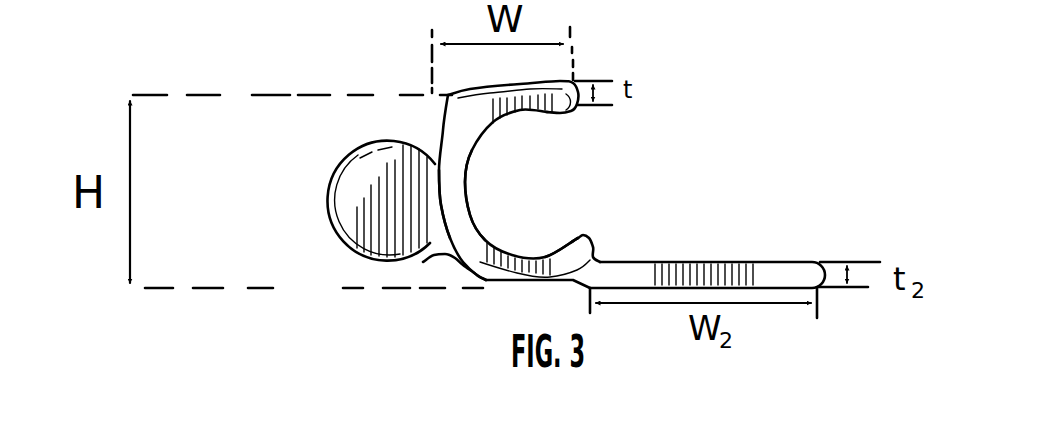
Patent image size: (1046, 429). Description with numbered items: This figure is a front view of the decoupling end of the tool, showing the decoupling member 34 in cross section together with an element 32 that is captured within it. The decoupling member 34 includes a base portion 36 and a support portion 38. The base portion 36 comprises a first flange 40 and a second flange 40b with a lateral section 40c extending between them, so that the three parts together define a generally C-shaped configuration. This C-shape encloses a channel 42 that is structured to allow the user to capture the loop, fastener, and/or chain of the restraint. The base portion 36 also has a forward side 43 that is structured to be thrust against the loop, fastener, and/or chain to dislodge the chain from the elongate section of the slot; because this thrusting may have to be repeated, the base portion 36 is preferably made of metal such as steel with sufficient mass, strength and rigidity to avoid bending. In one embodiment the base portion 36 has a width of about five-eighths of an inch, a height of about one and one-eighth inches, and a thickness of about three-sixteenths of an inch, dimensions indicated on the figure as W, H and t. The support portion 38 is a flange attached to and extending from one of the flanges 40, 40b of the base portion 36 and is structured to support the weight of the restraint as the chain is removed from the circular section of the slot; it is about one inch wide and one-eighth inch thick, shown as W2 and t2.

The elongated member (tube) held by clip 32 is at (352, 180).
The decoupling member 34 is at (458, 292).
The base portion 36 is at (467, 168).
The support portion 38 is at (767, 262).
The first flange 40 is at (540, 114).
The second flange 40b is at (535, 279).
The lateral section 40c is at (467, 193).
The channel 42 is at (545, 224).
The forward side 43 is at (465, 225).